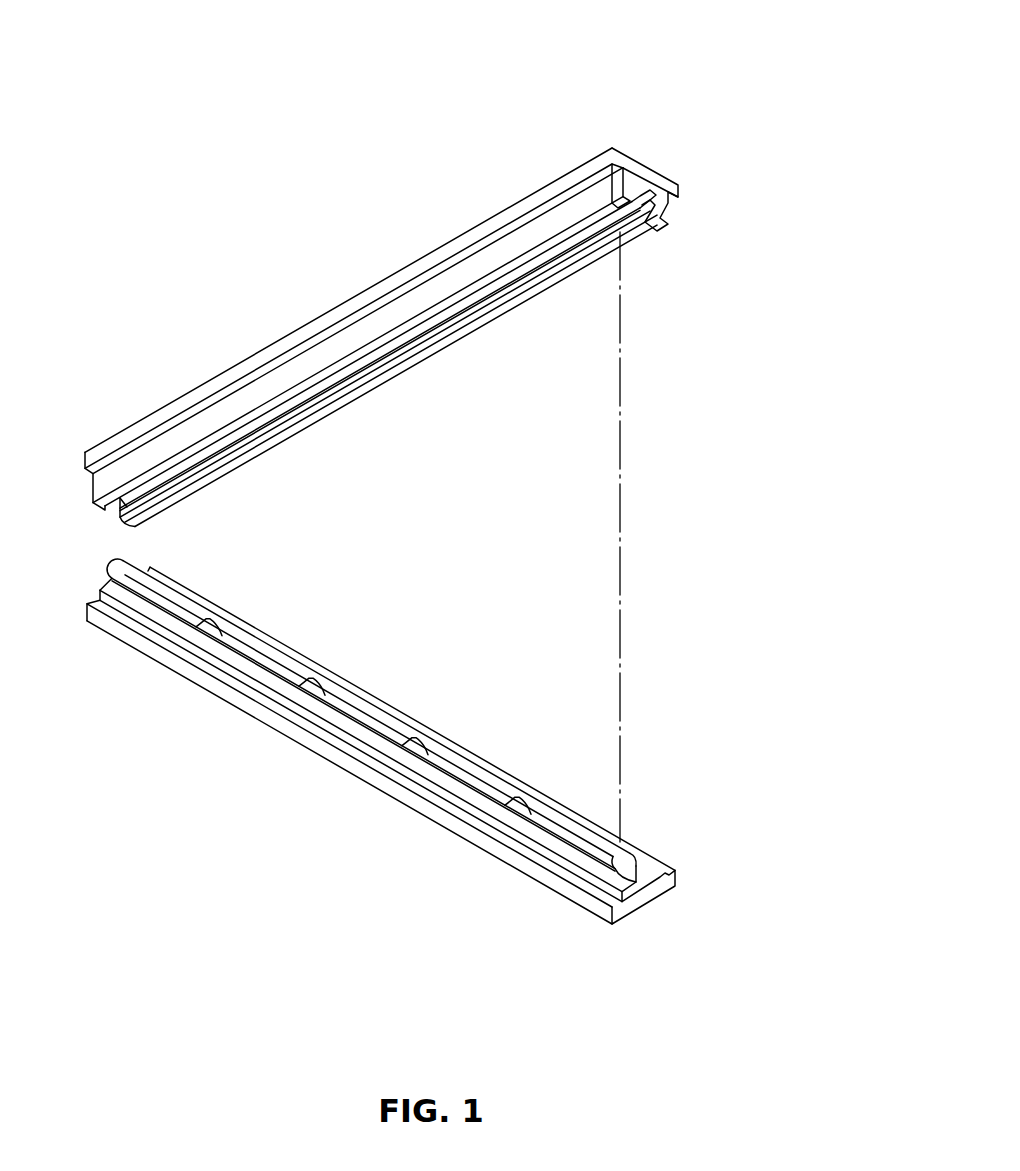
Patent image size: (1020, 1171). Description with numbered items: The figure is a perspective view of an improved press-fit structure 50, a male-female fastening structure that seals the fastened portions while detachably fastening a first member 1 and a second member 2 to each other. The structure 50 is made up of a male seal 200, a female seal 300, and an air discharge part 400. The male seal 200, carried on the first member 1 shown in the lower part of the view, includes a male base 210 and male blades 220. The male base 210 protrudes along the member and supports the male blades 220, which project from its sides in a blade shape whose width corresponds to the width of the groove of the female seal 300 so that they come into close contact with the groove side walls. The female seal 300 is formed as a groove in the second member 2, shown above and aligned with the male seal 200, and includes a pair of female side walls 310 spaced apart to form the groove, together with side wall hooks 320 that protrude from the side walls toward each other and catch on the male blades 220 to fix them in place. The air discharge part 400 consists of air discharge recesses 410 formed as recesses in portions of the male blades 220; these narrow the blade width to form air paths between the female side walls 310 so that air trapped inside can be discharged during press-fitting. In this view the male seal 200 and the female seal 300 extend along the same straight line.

The improved press-fit structure 50 is at (114, 123).
The first member 1 is at (150, 652).
The second member 2 is at (345, 306).
The male seal 200 is at (617, 1007).
The male base 210 is at (620, 846).
The male blades 220 is at (562, 832).
The female seal 300 is at (790, 77).
The female side walls 310 is at (612, 147).
The side wall hooks 320 is at (645, 205).
The air discharge part 400 is at (210, 866).
The air discharge recesses 410 is at (313, 692).